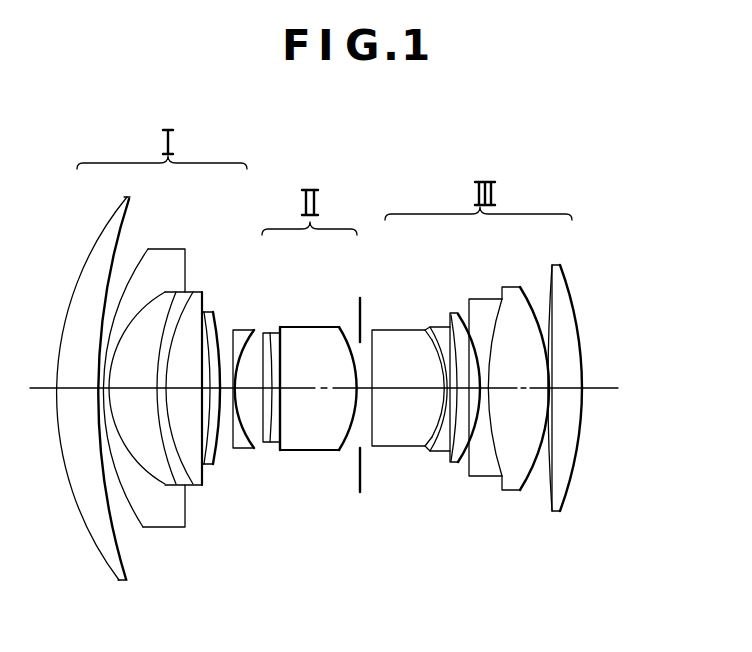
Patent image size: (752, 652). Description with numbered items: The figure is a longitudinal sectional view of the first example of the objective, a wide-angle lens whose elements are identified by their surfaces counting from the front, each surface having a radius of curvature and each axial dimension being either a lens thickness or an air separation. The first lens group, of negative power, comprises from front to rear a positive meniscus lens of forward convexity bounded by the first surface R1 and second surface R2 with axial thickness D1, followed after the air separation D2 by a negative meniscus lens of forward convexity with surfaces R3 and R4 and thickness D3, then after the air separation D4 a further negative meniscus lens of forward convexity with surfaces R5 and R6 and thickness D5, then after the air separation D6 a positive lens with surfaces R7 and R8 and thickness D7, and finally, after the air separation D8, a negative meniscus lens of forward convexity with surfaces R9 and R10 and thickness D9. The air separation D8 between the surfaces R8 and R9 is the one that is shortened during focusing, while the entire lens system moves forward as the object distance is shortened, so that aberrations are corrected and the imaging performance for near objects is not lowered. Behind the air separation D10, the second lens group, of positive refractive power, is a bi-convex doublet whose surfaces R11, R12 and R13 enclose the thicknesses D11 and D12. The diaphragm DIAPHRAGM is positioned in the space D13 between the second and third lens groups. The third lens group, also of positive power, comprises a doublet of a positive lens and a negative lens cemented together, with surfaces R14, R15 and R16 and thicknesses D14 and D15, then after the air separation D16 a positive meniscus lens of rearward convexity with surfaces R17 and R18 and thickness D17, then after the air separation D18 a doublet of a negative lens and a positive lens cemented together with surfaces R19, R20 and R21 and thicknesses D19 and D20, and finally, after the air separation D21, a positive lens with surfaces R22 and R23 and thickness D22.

The first lens surface R1 is at (110, 212).
The second lens surface R2 is at (128, 207).
The third lens surface R3 is at (145, 253).
The fourth lens surface R4 is at (166, 291).
The fifth lens surface R5 is at (193, 313).
The sixth lens surface R6 is at (212, 320).
The seventh lens surface R7 is at (219, 324).
The eighth lens surface R8 is at (235, 328).
The ninth lens surface R9 is at (239, 337).
The tenth lens surface R10 is at (260, 336).
The eleventh lens surface R11 is at (282, 336).
The twelfth lens surface R12 is at (303, 336).
The thirteenth lens surface R13 is at (348, 336).
The fourteenth lens surface R14 is at (372, 330).
The fifteenth lens surface R15 is at (421, 338).
The sixteenth lens surface R16 is at (441, 343).
The seventeenth lens surface R17 is at (450, 322).
The eighteenth lens surface R18 is at (458, 318).
The nineteenth lens surface R19 is at (467, 322).
The twentieth lens surface R20 is at (493, 318).
The twenty-first lens surface R21 is at (526, 288).
The twenty-second lens surface R22 is at (552, 268).
The twenty-third lens surface R23 is at (571, 288).
The first axial thickness D1 is at (83, 390).
The second axial air separation D2 is at (110, 486).
The third axial thickness D3 is at (134, 488).
The fourth axial air separation D4 is at (120, 390).
The fifth axial thickness D5 is at (194, 490).
The sixth axial air separation D6 is at (176, 390).
The seventh axial thickness D7 is at (213, 466).
The eighth axial air separation D8 is at (240, 452).
The ninth axial thickness D9 is at (259, 447).
The tenth axial air separation D10 is at (268, 446).
The eleventh axial thickness D11 is at (283, 450).
The twelfth axial thickness D12 is at (309, 390).
The thirteenth axial air separation D13 is at (358, 452).
The fourteenth axial thickness D14 is at (387, 390).
The fifteenth axial thickness D15 is at (440, 460).
The sixteenth axial air separation D16 is at (450, 463).
The seventeenth axial thickness D17 is at (455, 465).
The eighteenth axial air separation D18 is at (465, 465).
The nineteenth axial thickness D19 is at (486, 478).
The twentieth axial thickness D20 is at (512, 390).
The twenty-first axial air separation D21 is at (551, 482).
The twenty-second axial thickness D22 is at (564, 390).
The diaphragm DIAPHRAGM is at (362, 482).